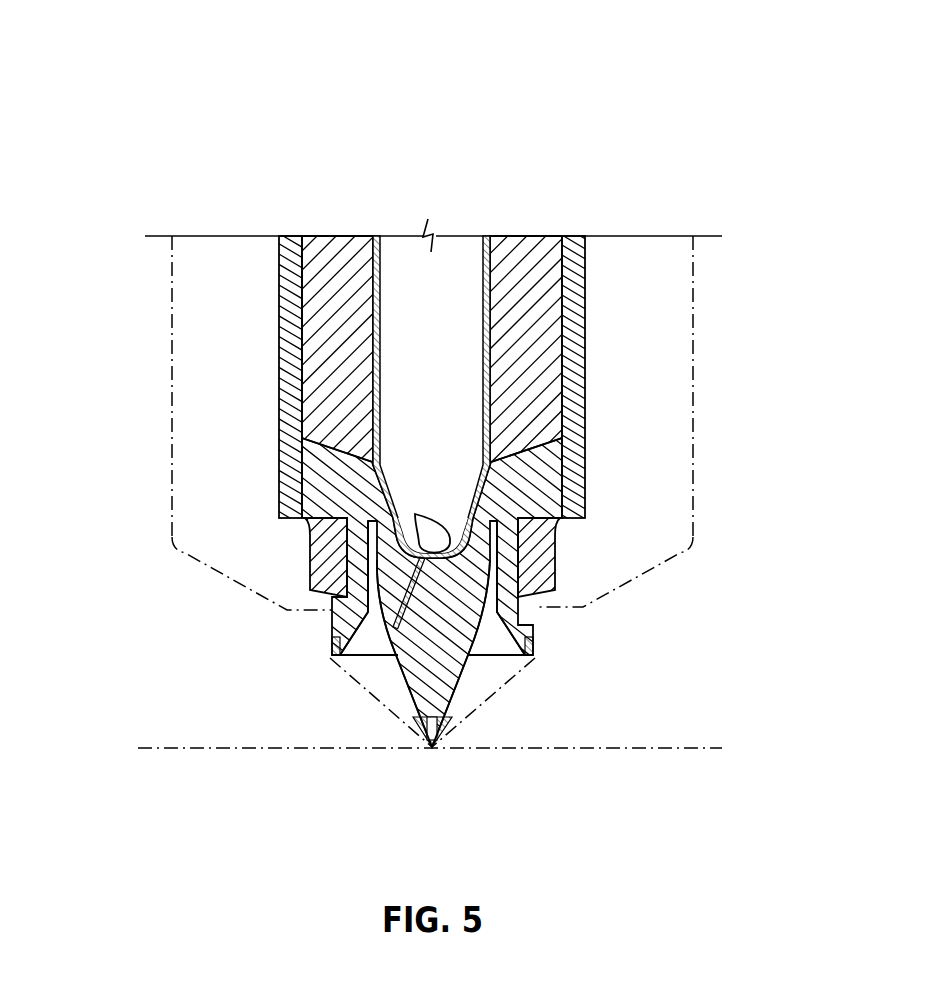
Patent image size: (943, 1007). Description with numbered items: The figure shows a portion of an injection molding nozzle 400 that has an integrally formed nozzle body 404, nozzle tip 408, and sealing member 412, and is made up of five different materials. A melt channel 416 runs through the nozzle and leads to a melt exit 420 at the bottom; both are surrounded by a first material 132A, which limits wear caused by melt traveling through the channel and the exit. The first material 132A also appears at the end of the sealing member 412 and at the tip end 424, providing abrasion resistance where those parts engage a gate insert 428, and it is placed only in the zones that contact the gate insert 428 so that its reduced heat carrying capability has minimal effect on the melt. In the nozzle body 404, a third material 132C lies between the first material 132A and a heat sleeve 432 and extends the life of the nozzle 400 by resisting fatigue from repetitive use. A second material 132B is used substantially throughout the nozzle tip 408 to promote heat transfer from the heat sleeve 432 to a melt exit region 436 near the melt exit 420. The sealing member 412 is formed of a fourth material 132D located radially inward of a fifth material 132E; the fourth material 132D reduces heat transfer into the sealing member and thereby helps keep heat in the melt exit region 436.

The nozzle 400 is at (690, 108).
The nozzle body 404 is at (597, 355).
The nozzle tip 408 is at (290, 618).
The sealing member 412 is at (283, 557).
The melt channel 416 is at (460, 178).
The melt exit 420 is at (368, 645).
The tip end 424 is at (462, 700).
The gate insert 428 is at (390, 690).
The heat sleeve 432 is at (578, 402).
The melt exit region 436 is at (325, 668).
The first material 132A is at (386, 250).
The second material 132B is at (327, 470).
The third material 132C is at (524, 256).
The fourth material 132D is at (505, 560).
The fifth material 132E is at (537, 577).